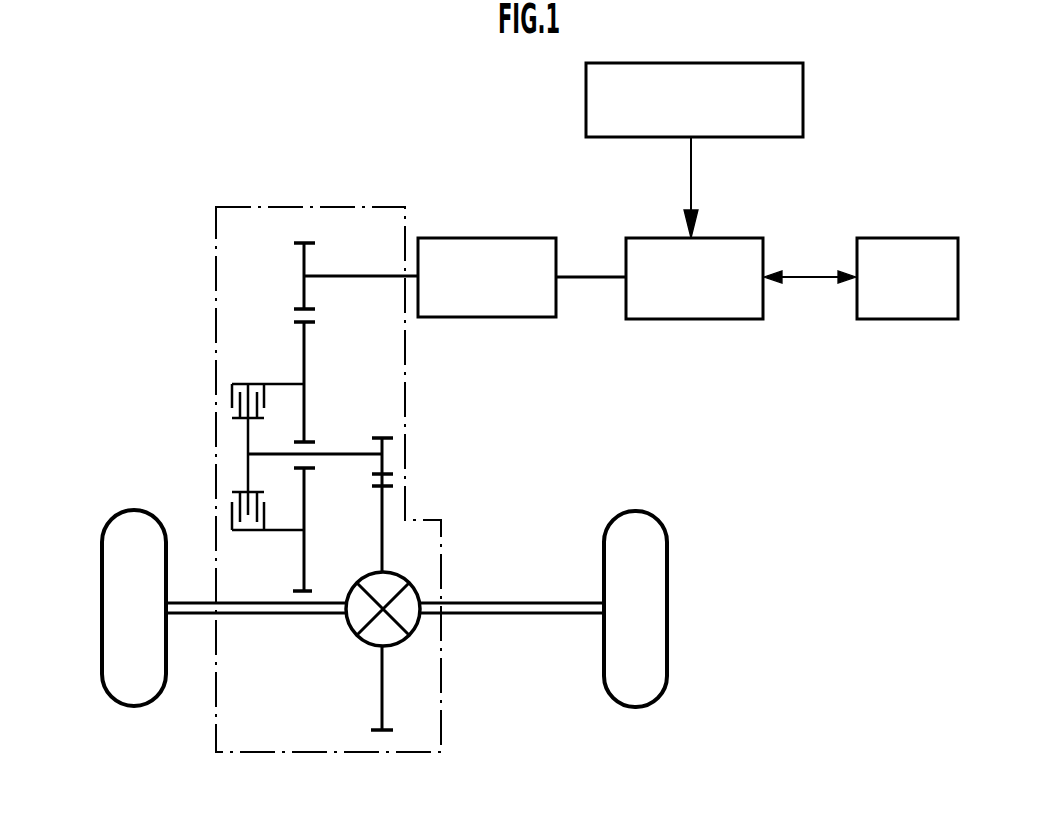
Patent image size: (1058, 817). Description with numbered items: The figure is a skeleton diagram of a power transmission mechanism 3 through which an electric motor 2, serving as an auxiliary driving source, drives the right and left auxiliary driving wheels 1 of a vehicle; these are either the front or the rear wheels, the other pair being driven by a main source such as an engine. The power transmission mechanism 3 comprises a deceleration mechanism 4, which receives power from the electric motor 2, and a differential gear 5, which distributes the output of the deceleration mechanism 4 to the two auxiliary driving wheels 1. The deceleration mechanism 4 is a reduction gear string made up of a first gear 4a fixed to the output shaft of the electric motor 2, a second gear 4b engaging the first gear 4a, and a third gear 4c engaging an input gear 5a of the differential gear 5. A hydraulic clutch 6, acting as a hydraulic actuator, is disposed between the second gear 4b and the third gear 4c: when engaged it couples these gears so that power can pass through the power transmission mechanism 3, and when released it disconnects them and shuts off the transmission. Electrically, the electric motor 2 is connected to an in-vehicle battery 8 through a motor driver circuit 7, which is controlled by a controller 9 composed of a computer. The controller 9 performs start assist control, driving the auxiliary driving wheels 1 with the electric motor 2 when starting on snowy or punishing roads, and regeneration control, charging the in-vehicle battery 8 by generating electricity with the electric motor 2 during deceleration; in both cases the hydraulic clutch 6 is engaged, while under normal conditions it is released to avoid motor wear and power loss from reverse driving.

The auxiliary driving wheel 1 is at (101, 618).
The electric motor 2 is at (519, 318).
The power transmission mechanism 3 is at (240, 172).
The deceleration mechanism 4 is at (321, 409).
The first gear 4a is at (305, 258).
The second gear 4b is at (305, 362).
The third gear 4c is at (381, 446).
The differential gear 5 is at (362, 641).
The input gear 5a is at (382, 520).
The hydraulic clutch 6 is at (257, 384).
The motor driver circuit 7 is at (728, 320).
The in-vehicle battery 8 is at (915, 320).
The controller 9 is at (803, 75).